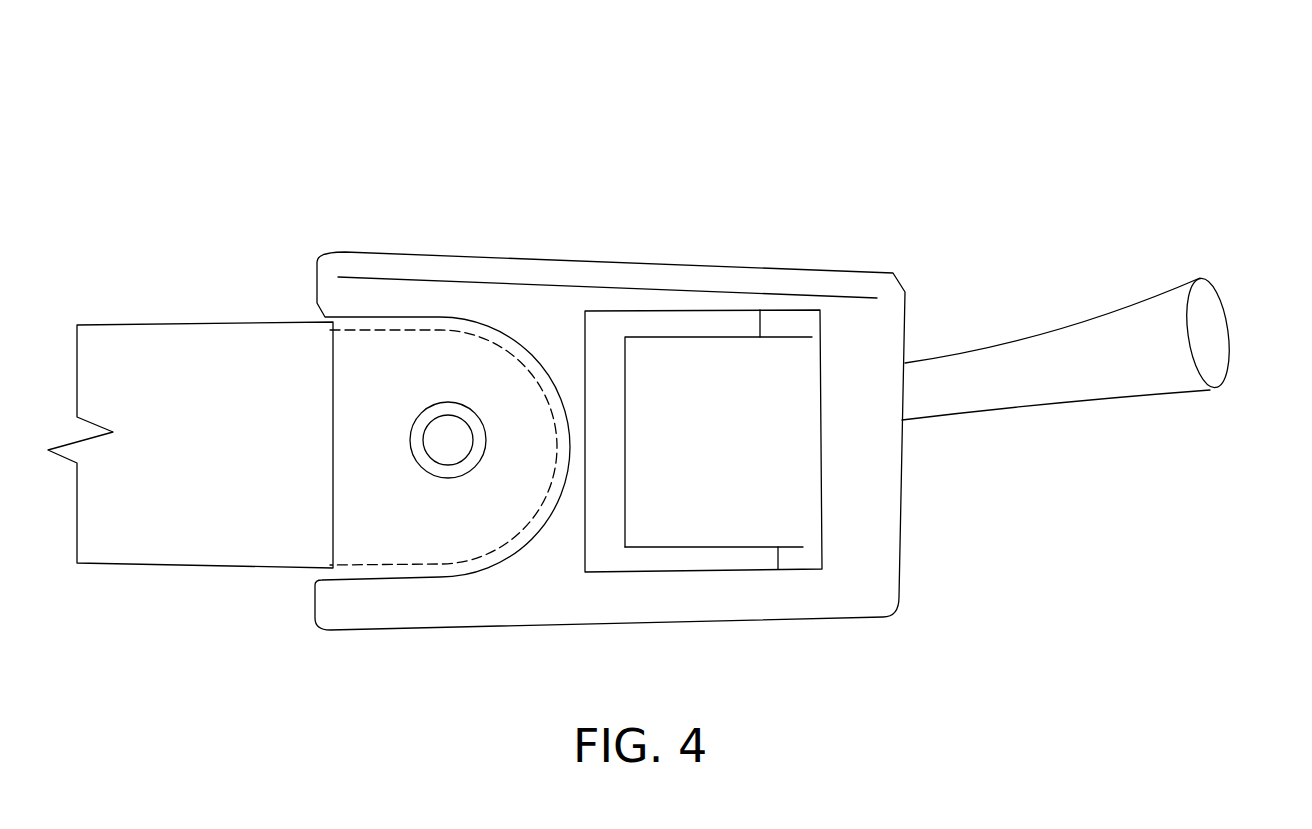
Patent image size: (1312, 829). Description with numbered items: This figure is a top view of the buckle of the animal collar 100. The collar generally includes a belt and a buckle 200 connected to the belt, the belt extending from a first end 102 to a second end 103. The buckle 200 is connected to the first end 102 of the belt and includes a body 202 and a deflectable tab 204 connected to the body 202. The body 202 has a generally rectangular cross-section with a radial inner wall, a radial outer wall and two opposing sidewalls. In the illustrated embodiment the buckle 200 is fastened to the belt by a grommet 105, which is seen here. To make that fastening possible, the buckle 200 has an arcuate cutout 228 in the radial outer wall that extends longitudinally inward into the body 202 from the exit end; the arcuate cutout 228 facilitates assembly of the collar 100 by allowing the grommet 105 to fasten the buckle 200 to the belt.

The animal collar 100 is at (1207, 128).
The first end 102 is at (510, 388).
The second end 103 is at (1208, 392).
The grommet 105 is at (447, 478).
The buckle 200 is at (595, 436).
The body 202 is at (818, 597).
The deflectable tab 204 is at (650, 437).
The arcuate cutout 228 is at (392, 580).